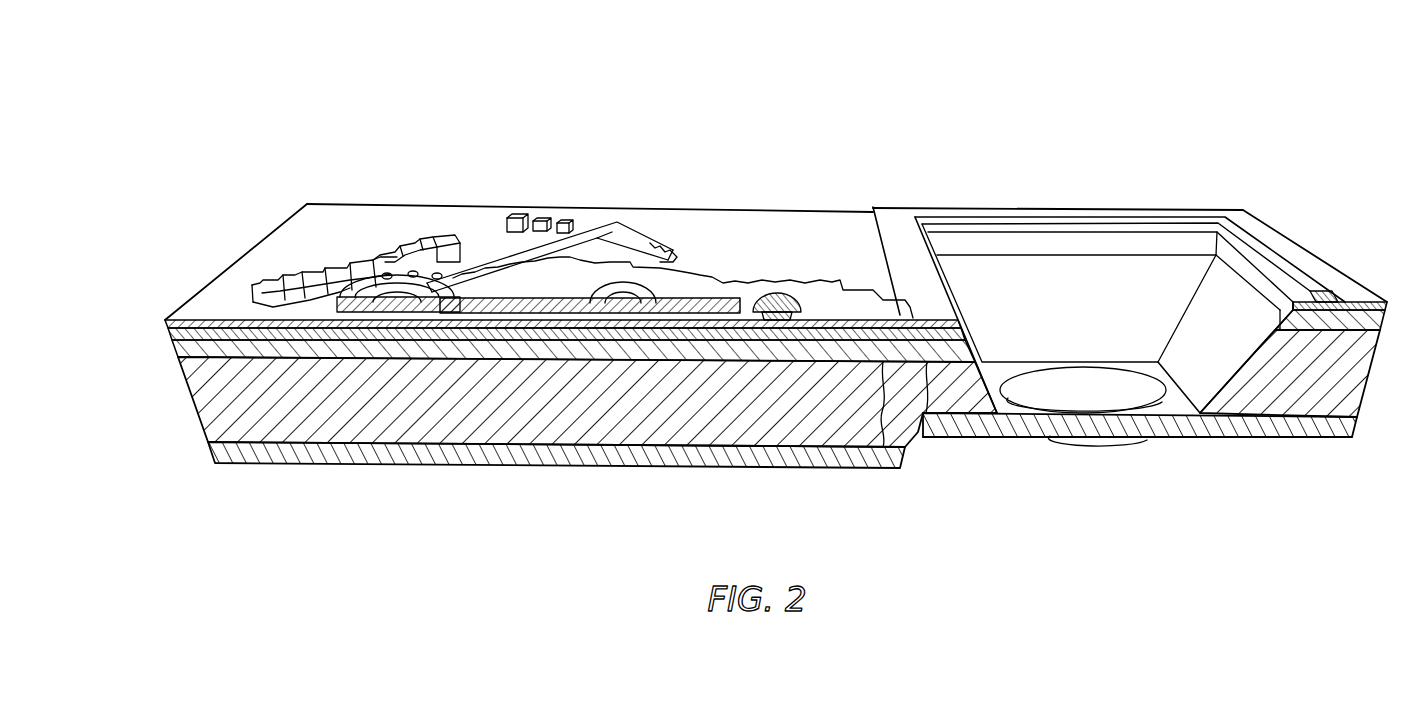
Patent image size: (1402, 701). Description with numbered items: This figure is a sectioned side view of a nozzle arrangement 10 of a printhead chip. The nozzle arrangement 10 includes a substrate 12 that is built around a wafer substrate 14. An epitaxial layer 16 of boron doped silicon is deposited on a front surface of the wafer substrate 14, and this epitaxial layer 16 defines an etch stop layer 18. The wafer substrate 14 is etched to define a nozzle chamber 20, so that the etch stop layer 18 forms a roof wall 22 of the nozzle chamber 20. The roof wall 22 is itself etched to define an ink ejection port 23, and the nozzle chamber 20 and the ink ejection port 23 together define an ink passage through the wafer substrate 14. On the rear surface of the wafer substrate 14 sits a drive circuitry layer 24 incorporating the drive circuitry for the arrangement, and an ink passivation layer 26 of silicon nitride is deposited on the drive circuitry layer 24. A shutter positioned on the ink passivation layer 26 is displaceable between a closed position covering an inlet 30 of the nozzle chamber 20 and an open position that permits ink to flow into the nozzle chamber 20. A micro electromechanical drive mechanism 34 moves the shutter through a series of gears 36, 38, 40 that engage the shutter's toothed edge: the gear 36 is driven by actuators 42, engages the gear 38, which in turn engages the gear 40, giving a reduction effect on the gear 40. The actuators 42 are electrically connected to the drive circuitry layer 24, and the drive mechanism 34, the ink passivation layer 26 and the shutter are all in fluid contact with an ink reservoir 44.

The nozzle arrangement 10 is at (404, 150).
The substrate 12 is at (1378, 350).
The wafer substrate 14 is at (1372, 438).
The epitaxial layer 16 is at (303, 457).
The etch stop layer 18 is at (547, 467).
The nozzle chamber 20 is at (1047, 295).
The roof wall 22 is at (975, 437).
The ink ejection port 23 is at (1084, 406).
The drive circuitry layer 24 is at (1356, 305).
The ink passivation layer 26 is at (1390, 303).
The inlet 30 is at (1189, 230).
The micro electromechanical drive mechanism 34 is at (608, 224).
The gear 36 is at (370, 273).
The gear 38 is at (688, 290).
The gear 40 is at (848, 312).
The actuators 42 is at (462, 238).
The ink reservoir 44 is at (1022, 172).